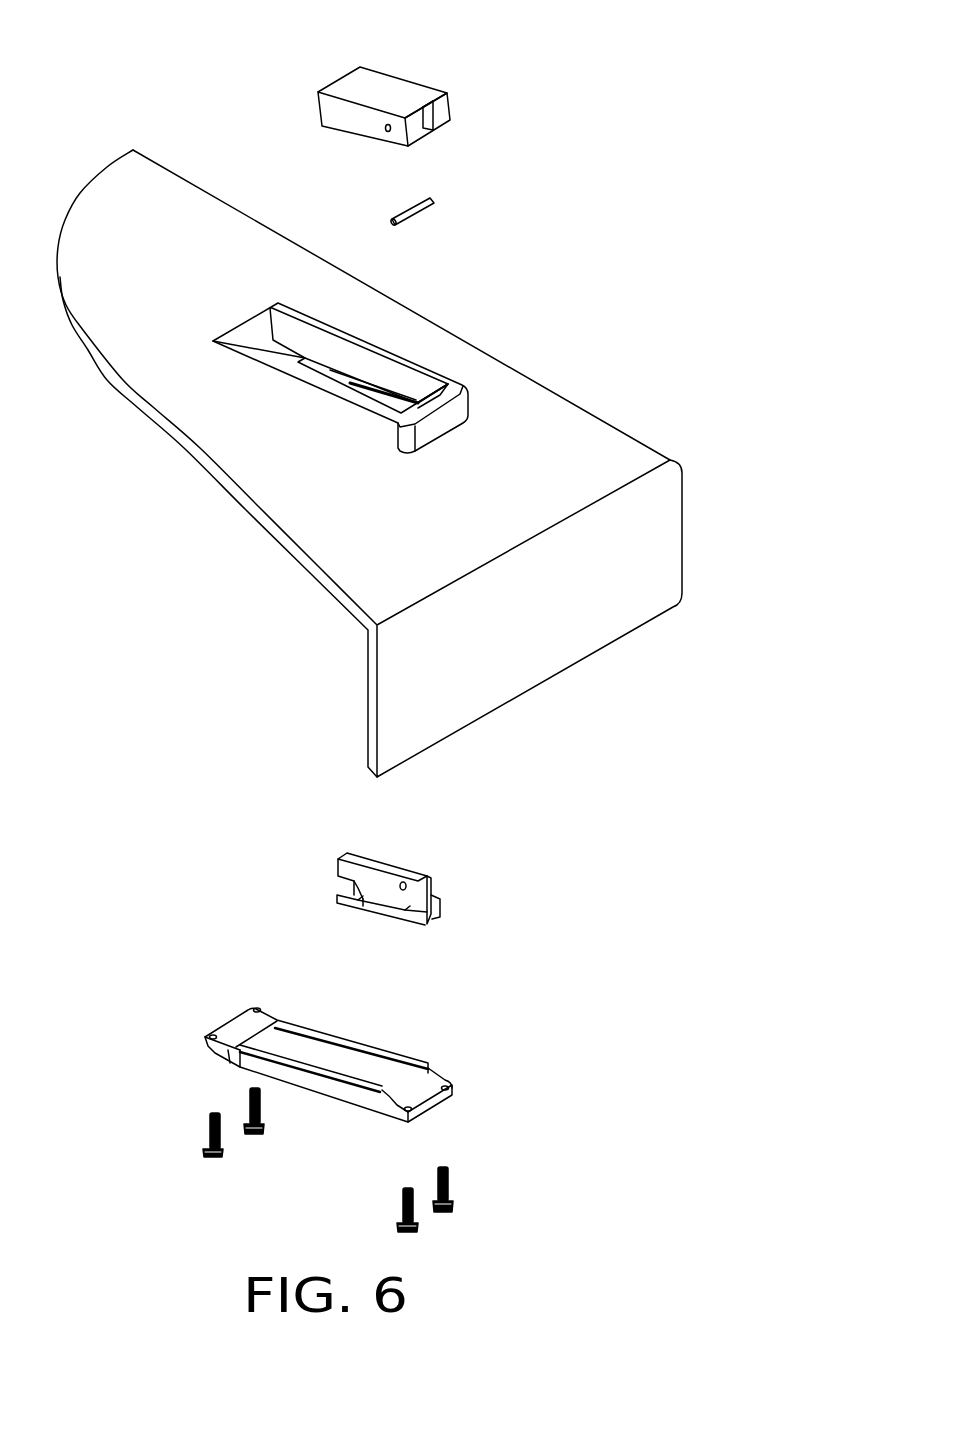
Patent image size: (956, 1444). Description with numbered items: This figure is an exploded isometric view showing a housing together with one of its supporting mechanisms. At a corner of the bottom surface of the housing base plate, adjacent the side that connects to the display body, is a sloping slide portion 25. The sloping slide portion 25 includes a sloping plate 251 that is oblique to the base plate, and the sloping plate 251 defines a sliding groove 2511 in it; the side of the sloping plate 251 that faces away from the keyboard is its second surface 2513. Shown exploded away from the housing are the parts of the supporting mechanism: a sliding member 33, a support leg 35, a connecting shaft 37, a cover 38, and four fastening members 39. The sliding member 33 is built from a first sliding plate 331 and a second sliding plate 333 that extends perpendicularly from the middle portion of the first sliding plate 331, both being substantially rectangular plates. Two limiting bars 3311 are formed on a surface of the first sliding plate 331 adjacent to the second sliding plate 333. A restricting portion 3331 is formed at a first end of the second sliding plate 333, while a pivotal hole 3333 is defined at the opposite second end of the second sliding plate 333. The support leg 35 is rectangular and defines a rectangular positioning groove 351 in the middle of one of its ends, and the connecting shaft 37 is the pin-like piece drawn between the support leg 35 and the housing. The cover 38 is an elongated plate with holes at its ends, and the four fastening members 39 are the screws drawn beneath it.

The sloping slide portion 25 is at (257, 331).
The sloping plate 251 is at (348, 368).
The sliding groove 2511 is at (392, 393).
The second surface 2513 is at (425, 383).
The support leg 35 is at (381, 88).
The positioning groove 351 is at (434, 127).
The connecting shaft 37 is at (408, 212).
The sliding member 33 is at (388, 898).
The first sliding plate 331 is at (412, 920).
The second sliding plate 333 is at (363, 900).
The limiting bar 3311 is at (353, 887).
The restricting portion 3331 is at (345, 865).
The pivotal hole 3333 is at (404, 882).
The cover 38 is at (345, 1062).
The fastening member 39 is at (447, 1190).